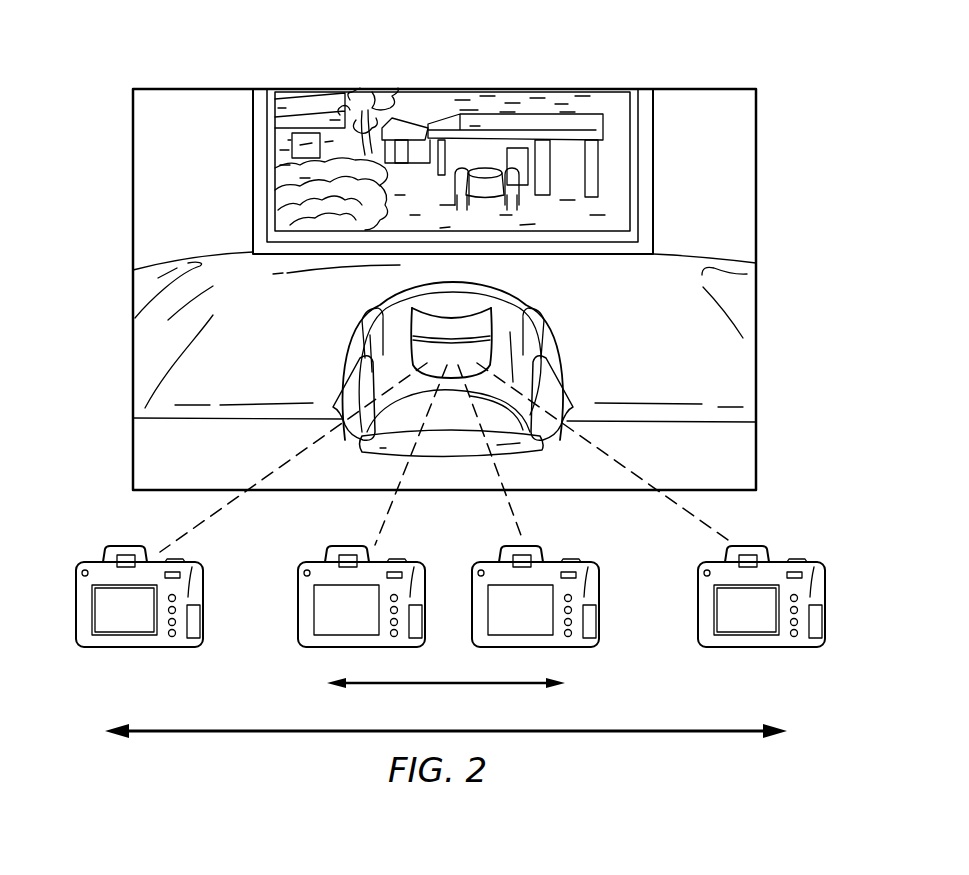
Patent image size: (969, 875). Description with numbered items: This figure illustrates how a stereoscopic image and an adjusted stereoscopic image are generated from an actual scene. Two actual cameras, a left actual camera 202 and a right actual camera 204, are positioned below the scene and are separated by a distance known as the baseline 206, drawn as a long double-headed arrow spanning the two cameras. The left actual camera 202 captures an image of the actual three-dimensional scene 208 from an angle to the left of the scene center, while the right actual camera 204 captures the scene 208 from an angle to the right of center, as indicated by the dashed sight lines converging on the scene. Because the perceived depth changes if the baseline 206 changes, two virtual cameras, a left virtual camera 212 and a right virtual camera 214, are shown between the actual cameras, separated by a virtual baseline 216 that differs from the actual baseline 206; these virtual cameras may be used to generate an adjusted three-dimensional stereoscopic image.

The left actual camera 202 is at (75, 605).
The right actual camera 204 is at (825, 600).
The baseline 206 is at (332, 733).
The actual three-dimensional scene 208 is at (132, 245).
The left virtual camera 212 is at (297, 605).
The right virtual camera 214 is at (599, 600).
The virtual baseline 216 is at (443, 685).